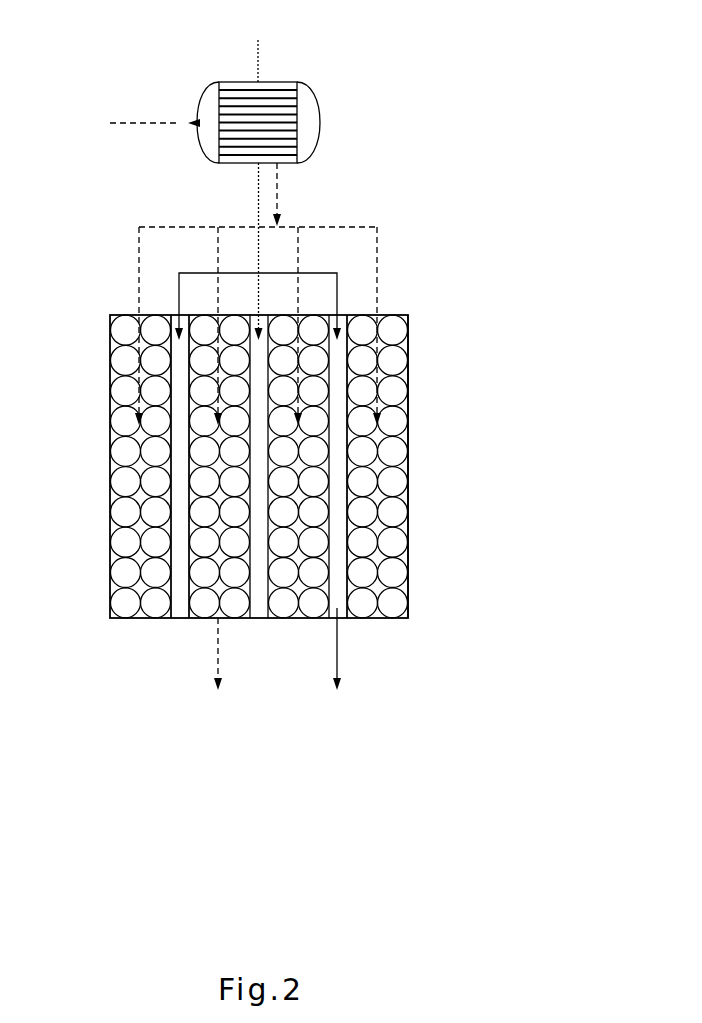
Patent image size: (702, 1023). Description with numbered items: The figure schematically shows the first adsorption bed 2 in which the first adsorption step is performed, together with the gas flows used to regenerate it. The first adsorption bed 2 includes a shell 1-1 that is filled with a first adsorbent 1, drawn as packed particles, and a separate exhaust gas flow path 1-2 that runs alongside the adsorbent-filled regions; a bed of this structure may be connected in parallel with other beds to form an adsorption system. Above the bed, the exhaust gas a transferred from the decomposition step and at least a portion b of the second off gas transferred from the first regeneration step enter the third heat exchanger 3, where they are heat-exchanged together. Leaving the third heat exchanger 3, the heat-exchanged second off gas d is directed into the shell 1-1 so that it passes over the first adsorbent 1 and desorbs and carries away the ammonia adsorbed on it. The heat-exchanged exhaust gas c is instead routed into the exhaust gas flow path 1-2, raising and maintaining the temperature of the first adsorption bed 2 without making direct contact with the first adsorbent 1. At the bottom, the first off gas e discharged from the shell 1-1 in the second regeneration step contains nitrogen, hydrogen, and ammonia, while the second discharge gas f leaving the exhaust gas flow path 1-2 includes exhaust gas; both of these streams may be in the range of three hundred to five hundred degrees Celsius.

The first adsorbent 1 is at (393, 512).
The shell 1-1 is at (408, 620).
The exhaust gas flow path 1-2 is at (189, 620).
The first adsorption bed 2 is at (408, 465).
The third heat exchanger 3 is at (318, 100).
The exhaust gas a is at (258, 42).
The portion of the second off gas b is at (143, 123).
The heat-exchanged exhaust gas c is at (248, 251).
The heat-exchanged second off gas d is at (288, 194).
The first off gas e is at (218, 672).
The second discharge gas f is at (337, 666).